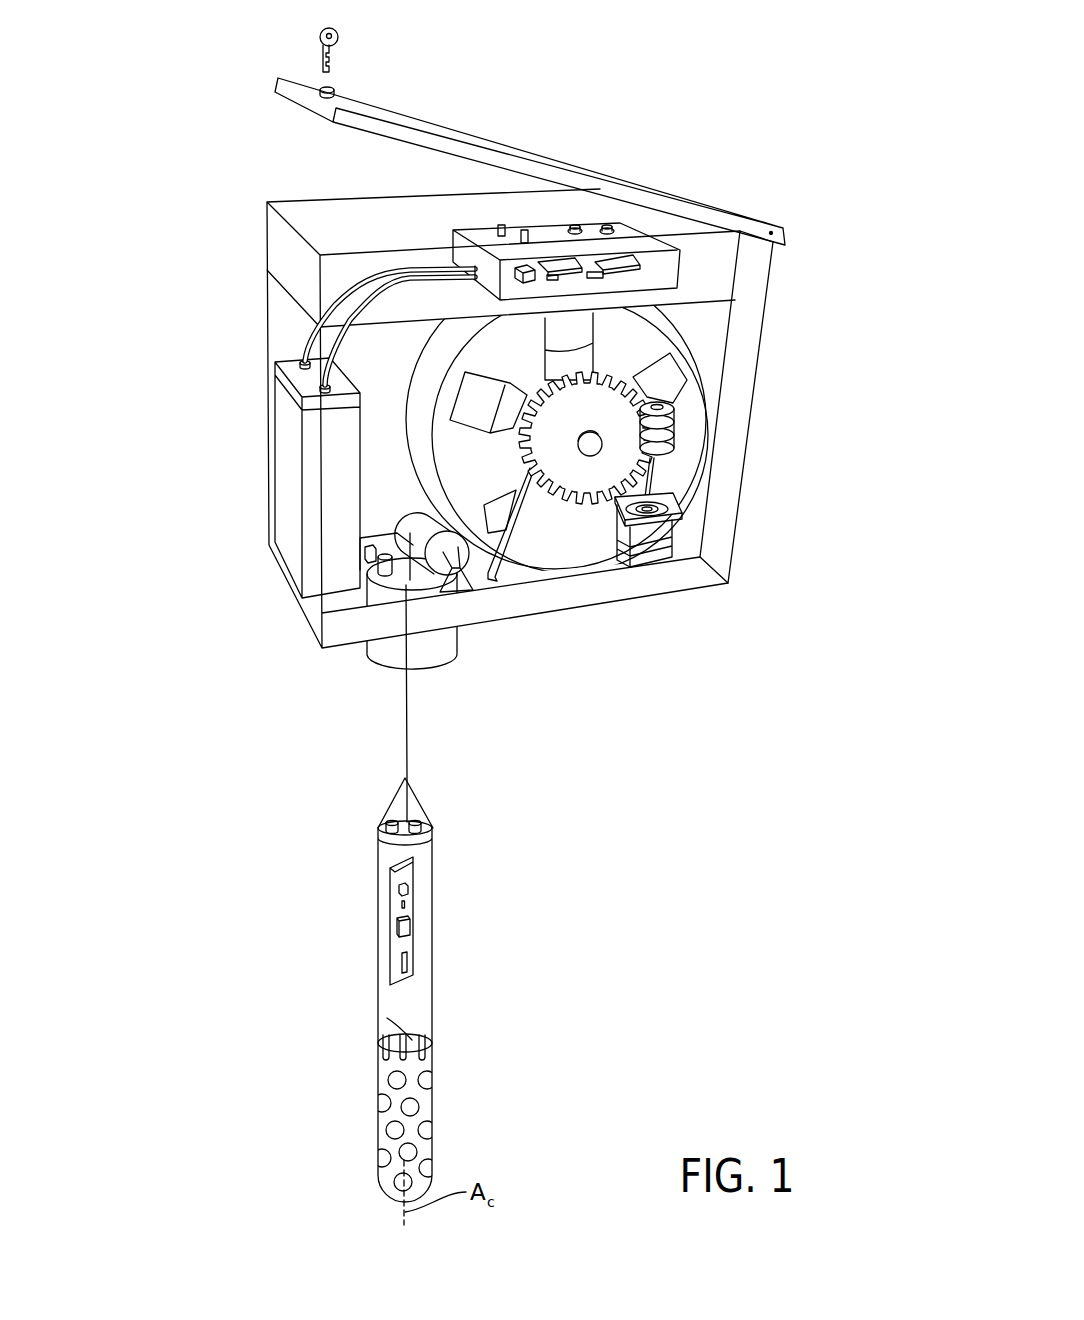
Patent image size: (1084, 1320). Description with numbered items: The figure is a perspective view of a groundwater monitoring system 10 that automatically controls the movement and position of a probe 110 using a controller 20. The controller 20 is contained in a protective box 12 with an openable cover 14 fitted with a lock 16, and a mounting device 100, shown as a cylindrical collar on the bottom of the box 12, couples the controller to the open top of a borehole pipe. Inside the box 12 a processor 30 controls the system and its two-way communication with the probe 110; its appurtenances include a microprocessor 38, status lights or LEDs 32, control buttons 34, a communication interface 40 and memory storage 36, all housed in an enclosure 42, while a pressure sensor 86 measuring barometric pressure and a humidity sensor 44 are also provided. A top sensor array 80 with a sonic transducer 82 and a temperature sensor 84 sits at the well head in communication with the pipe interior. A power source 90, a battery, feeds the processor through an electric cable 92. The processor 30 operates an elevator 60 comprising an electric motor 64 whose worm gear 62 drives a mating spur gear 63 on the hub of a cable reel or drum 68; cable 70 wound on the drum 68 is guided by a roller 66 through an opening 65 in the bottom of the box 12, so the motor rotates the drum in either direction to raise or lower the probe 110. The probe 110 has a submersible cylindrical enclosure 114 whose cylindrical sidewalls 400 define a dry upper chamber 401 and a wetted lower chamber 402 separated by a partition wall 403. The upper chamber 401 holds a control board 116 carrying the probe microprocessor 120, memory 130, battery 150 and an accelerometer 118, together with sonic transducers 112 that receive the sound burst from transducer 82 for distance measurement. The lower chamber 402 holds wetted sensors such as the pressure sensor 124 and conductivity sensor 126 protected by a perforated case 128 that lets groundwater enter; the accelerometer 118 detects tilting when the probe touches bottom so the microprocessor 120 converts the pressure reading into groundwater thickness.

The groundwater monitoring system 10 is at (793, 160).
The box 12 is at (770, 287).
The cover 14 is at (421, 122).
The lock 16 is at (332, 87).
The controller 20 is at (245, 285).
The processor 30 is at (637, 213).
The status lights or LEDs 32 is at (525, 231).
The control buttons 34 is at (608, 227).
The memory storage 36 is at (515, 268).
The microprocessor 38 is at (550, 260).
The communication interface 40 is at (625, 258).
The enclosure 42 is at (482, 237).
The humidity sensor 44 is at (690, 343).
The elevator 60 is at (693, 487).
The worm gear 62 is at (665, 435).
The spur gear 63 is at (585, 495).
The electric motor 64 is at (660, 533).
The opening 65 is at (425, 690).
The roller 66 is at (474, 592).
The cable reel or drum 68 is at (680, 395).
The cable 70 is at (450, 596).
The top sensor array 80 is at (366, 578).
The sonic transducer 82 is at (393, 580).
The temperature sensor 84 is at (350, 558).
The pressure sensor 86 is at (700, 303).
The power source 90 is at (283, 427).
The electric cable 92 is at (348, 305).
The mounting device 100 is at (440, 660).
The probe 110 is at (467, 923).
The sonic transducer 112 is at (411, 820).
The cylindrical enclosure 114 is at (433, 967).
The control board 116 is at (389, 893).
The accelerometer 118 is at (402, 965).
The microprocessor 120 is at (397, 924).
The pressure sensor 124 is at (400, 1018).
The conductivity sensor 126 is at (430, 1052).
The perforated case 128 is at (388, 1144).
The memory 130 is at (404, 884).
The battery 150 is at (402, 906).
The cylindrical sidewalls 400 is at (437, 940).
The upper chamber 401 is at (445, 945).
The lower chamber 402 is at (427, 1098).
The partition wall 403 is at (385, 1020).